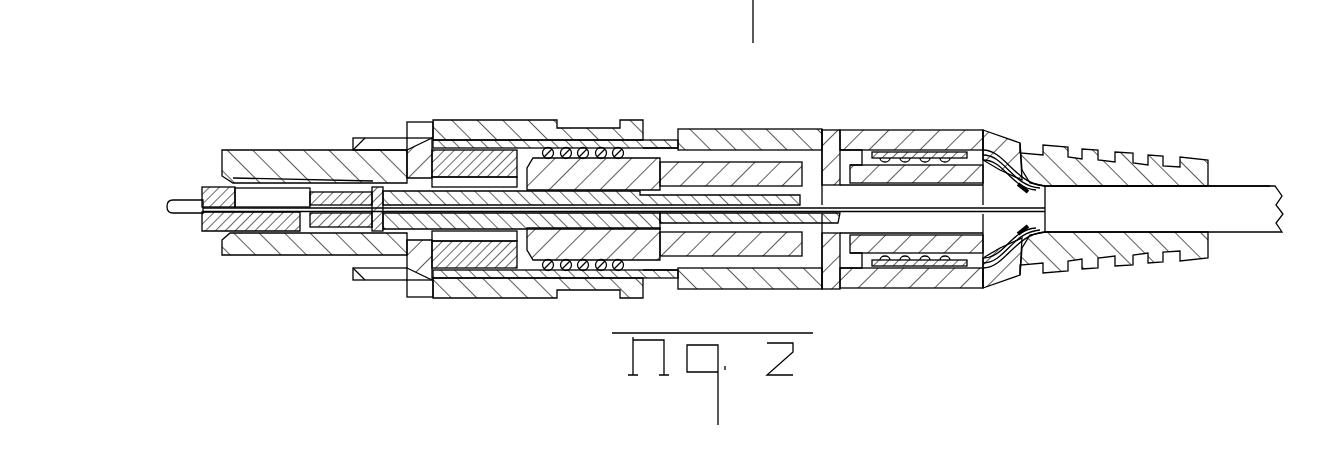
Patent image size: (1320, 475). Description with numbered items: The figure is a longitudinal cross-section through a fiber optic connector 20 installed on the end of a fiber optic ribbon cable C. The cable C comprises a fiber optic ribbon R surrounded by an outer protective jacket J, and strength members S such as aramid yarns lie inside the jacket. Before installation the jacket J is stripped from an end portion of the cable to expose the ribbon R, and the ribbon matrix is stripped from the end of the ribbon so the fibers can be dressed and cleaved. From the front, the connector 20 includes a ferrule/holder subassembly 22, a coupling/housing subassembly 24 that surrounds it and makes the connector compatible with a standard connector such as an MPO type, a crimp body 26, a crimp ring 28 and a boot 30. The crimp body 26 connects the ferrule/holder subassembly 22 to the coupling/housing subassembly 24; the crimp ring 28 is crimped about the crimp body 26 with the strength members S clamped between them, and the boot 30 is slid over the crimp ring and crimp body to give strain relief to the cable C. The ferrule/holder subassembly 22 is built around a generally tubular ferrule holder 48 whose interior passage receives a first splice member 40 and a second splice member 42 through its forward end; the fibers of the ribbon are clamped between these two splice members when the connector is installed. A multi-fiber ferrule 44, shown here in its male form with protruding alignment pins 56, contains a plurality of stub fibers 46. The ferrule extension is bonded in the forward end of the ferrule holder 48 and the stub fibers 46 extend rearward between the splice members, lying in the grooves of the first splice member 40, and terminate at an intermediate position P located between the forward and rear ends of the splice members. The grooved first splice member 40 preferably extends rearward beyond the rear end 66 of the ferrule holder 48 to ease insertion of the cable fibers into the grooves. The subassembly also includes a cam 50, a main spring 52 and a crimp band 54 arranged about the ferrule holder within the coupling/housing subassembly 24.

The fiber optic connector 20 is at (883, 73).
The ferrule/holder subassembly 22 is at (708, 140).
The coupling/housing subassembly 24 is at (535, 118).
The crimp body 26 is at (872, 245).
The crimp ring 28 is at (962, 153).
The boot 30 is at (1122, 153).
The first splice member 40 is at (548, 243).
The second splice member 42 is at (405, 205).
The multi-fiber ferrule 44 is at (207, 227).
The stub fibers 46 is at (408, 213).
The ferrule holder 48 is at (647, 242).
The cam 50 is at (462, 155).
The main spring 52 is at (602, 148).
The crimp band 54 is at (765, 152).
The alignment pins 56 is at (182, 203).
The rear end of the ferrule holder 66 is at (858, 155).
The fiber optic ribbon R is at (1040, 178).
The strength members S is at (1032, 233).
The fiber optic ribbon cable C is at (1245, 182).
The outer protective jacket J is at (1255, 218).
The intermediate position P is at (457, 241).